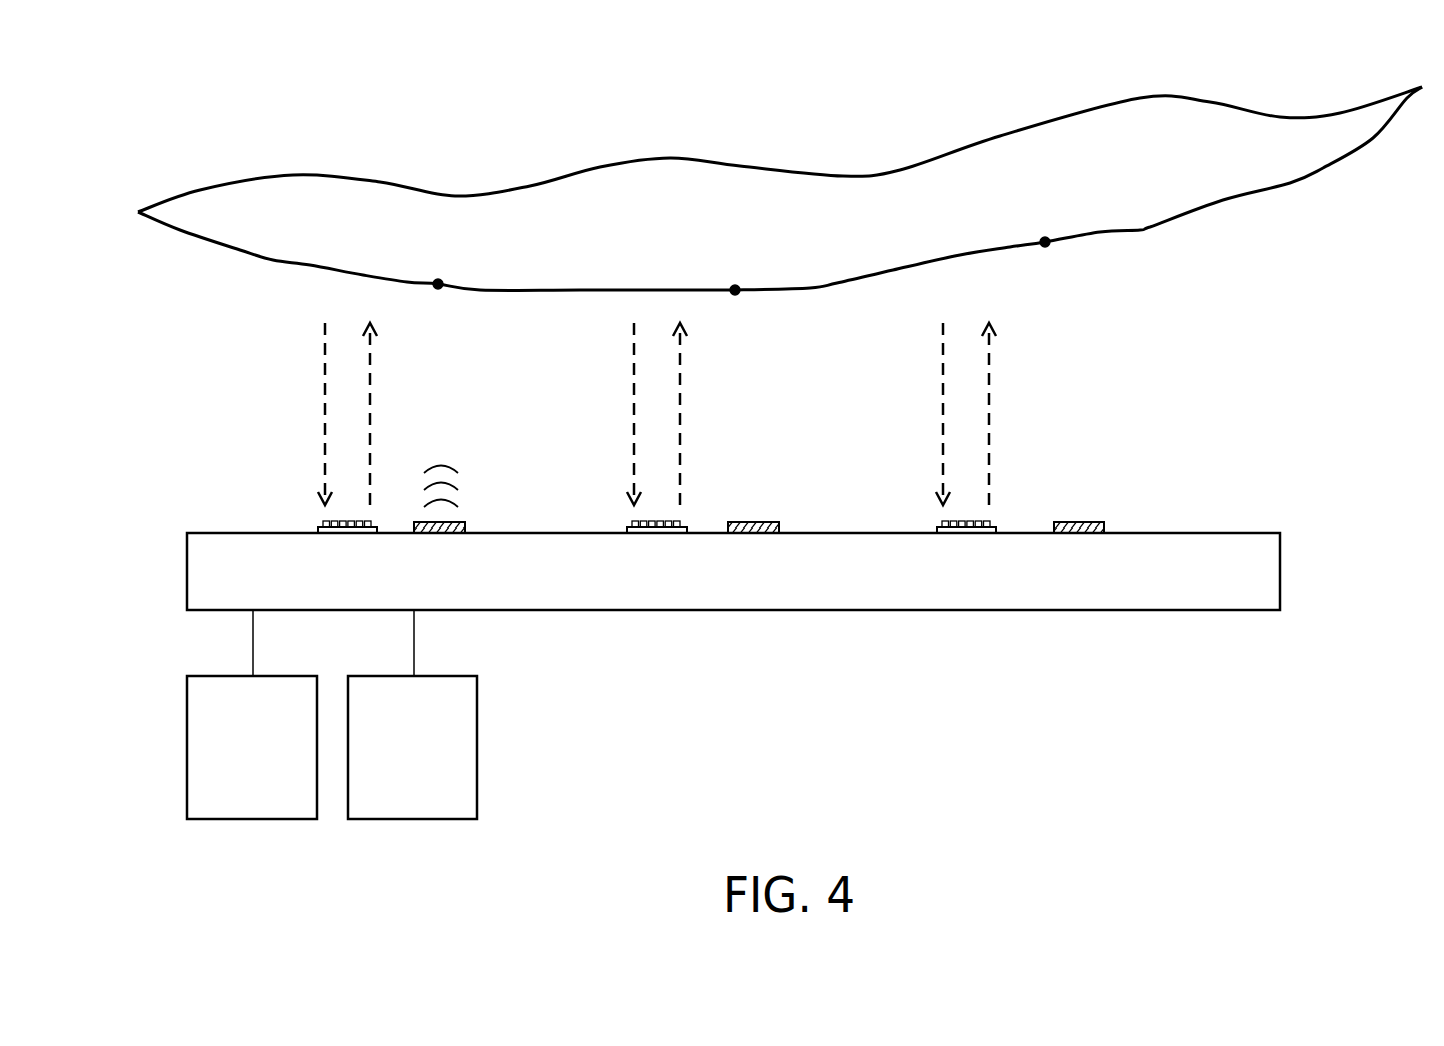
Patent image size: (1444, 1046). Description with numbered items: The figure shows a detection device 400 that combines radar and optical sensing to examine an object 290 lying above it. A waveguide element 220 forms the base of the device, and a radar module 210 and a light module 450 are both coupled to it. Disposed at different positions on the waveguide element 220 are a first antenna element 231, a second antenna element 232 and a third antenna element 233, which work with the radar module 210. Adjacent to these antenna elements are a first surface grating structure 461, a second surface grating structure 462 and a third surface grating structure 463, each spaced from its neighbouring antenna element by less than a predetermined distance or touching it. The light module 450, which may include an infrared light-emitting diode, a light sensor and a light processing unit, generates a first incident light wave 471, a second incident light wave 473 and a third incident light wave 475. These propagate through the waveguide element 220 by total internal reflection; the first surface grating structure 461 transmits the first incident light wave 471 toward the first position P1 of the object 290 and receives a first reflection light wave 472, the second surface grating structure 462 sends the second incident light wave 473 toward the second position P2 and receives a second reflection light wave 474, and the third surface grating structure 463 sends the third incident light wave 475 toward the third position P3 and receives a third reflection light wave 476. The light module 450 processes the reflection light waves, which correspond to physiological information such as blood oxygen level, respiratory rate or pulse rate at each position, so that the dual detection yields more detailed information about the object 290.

The detection device 400 is at (188, 448).
The object 290 is at (1312, 150).
The waveguide element 220 is at (1270, 571).
The radar module 210 is at (253, 820).
The light module 450 is at (414, 820).
The first surface grating structure 461 is at (349, 534).
The second surface grating structure 462 is at (657, 534).
The third surface grating structure 463 is at (967, 534).
The first antenna element 231 is at (440, 534).
The second antenna element 232 is at (755, 534).
The third antenna element 233 is at (1083, 534).
The first incident light wave 471 is at (373, 415).
The first reflection light wave 472 is at (320, 415).
The second incident light wave 473 is at (683, 415).
The second reflection light wave 474 is at (629, 415).
The third incident light wave 475 is at (992, 415).
The third reflection light wave 476 is at (938, 415).
The first position P1 is at (438, 284).
The second position P2 is at (735, 290).
The third position P3 is at (1045, 242).